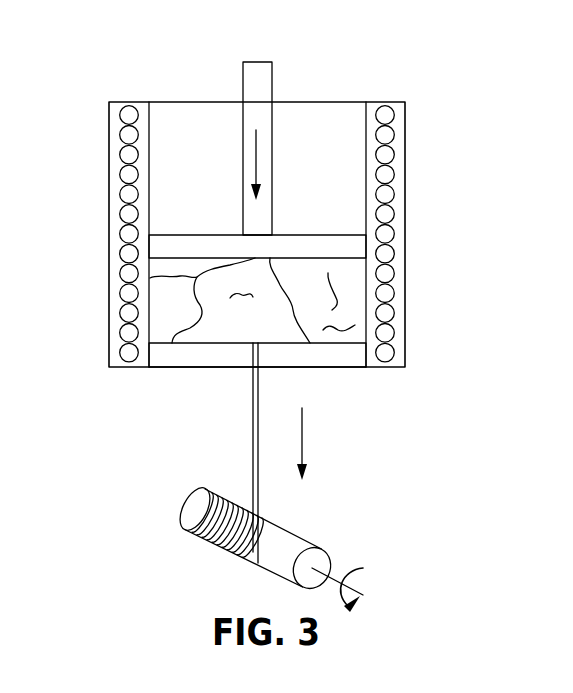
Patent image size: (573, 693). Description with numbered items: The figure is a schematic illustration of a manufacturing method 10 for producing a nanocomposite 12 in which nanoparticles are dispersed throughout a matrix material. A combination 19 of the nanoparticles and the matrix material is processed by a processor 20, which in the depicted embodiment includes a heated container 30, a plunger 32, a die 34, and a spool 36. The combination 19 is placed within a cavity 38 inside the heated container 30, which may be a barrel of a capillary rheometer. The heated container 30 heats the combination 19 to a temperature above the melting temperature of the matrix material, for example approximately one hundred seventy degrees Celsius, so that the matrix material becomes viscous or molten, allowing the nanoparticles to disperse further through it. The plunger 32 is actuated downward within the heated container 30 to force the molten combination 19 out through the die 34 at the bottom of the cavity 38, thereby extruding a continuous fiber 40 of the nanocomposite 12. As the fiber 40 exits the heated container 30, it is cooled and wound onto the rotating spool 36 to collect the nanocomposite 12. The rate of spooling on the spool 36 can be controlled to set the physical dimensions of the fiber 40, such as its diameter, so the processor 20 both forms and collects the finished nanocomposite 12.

The manufacturing method 10 is at (124, 62).
The nanocomposite 12 is at (222, 438).
The combination 19 is at (347, 318).
The processor 20 is at (413, 219).
The heated container 30 is at (395, 163).
The plunger 32 is at (258, 214).
The die 34 is at (324, 355).
The spool 36 is at (287, 542).
The cavity 38 is at (292, 290).
The continuous fiber 40 is at (253, 398).